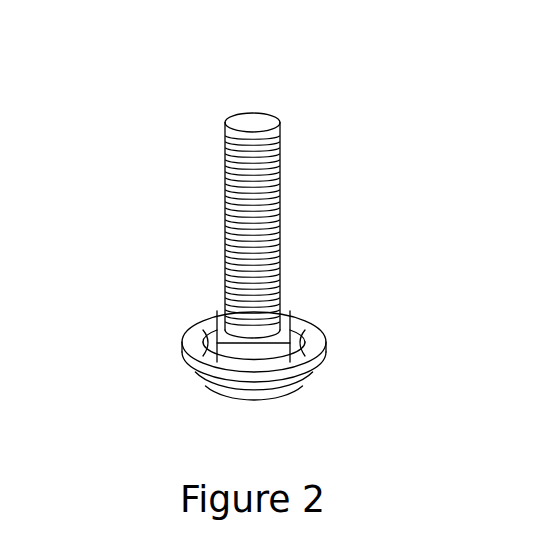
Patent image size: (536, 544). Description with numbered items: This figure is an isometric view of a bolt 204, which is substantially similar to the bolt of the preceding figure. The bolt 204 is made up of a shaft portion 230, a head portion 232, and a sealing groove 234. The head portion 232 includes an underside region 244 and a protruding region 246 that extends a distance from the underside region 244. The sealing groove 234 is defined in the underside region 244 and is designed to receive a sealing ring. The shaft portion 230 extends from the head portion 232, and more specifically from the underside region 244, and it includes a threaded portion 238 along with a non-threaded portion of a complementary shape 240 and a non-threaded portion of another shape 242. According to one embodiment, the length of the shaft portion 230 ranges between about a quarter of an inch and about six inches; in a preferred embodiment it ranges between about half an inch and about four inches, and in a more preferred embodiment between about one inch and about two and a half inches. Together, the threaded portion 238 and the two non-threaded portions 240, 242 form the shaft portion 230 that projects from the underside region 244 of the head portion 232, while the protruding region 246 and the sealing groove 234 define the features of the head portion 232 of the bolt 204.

The bolt 204 is at (177, 78).
The shaft portion 230 is at (253, 120).
The threaded portion 238 is at (278, 192).
The sealing groove 234 is at (205, 335).
The head portion 232 is at (190, 370).
The non-threaded portion of a complementary shape 240 is at (282, 358).
The non-threaded portion of another shape 242 is at (295, 340).
The underside region 244 is at (198, 337).
The protruding region 246 is at (257, 399).